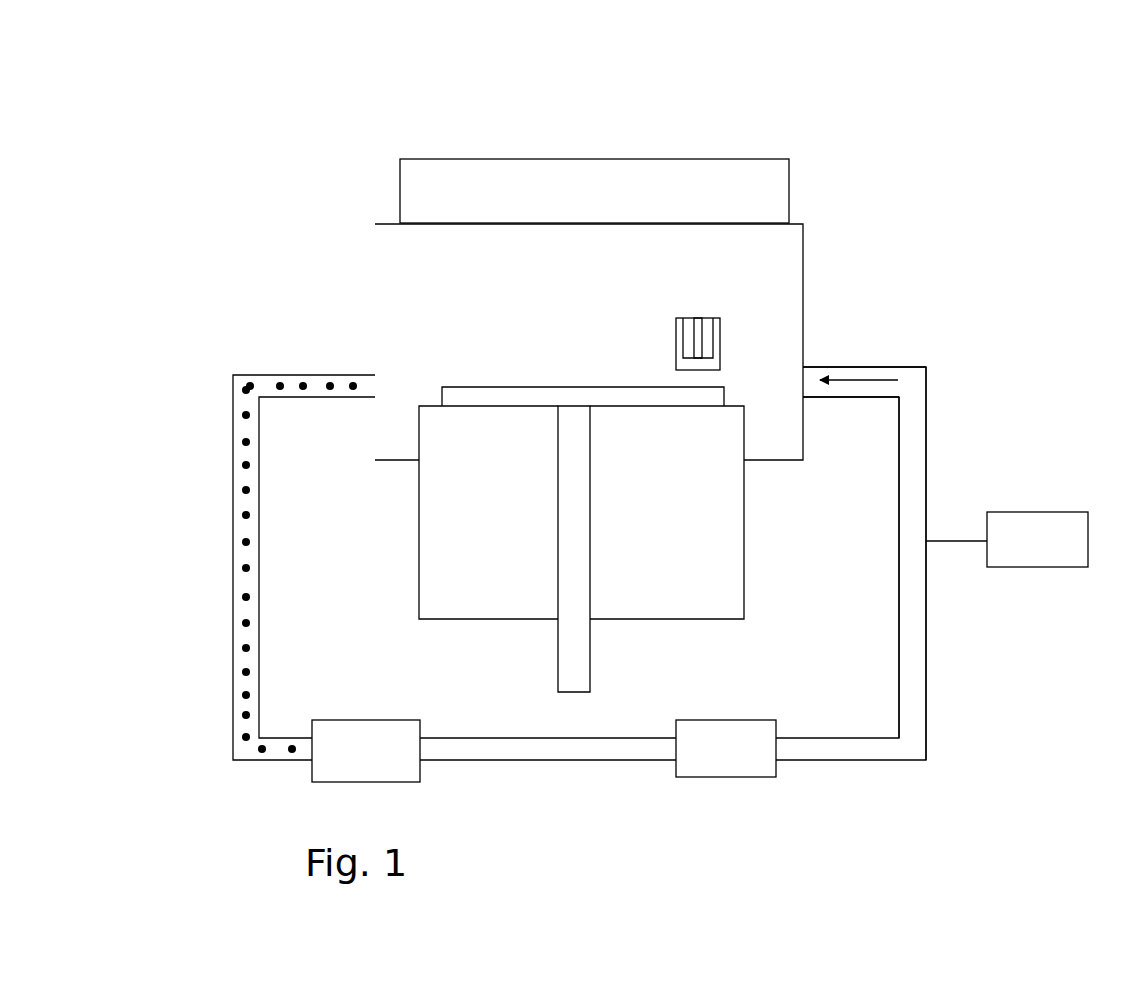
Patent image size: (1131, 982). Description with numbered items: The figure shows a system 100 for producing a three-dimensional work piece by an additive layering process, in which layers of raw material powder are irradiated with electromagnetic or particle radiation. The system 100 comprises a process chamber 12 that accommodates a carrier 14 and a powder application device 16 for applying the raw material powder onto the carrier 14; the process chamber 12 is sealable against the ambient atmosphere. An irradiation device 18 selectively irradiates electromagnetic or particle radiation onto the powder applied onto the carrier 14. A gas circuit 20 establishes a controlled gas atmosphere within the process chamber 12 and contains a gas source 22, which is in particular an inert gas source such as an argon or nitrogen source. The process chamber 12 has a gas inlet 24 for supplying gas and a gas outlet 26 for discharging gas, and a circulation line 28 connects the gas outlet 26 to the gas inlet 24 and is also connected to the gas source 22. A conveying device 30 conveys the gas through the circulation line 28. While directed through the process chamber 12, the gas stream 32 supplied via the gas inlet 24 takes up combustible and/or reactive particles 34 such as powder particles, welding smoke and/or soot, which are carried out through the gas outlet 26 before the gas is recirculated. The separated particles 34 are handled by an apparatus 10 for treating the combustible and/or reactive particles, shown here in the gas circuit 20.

The system 100 is at (347, 177).
The irradiation device 18 is at (698, 158).
The process chamber 12 is at (803, 246).
The carrier 14 is at (678, 400).
The powder application device 16 is at (676, 338).
The gas outlet 26 is at (368, 373).
The combustible and/or reactive particles 34 is at (236, 458).
The gas inlet 24 is at (805, 367).
The gas stream 32 is at (877, 378).
The circulation line 28 is at (927, 733).
The gas circuit 20 is at (201, 626).
The gas source 22 is at (1038, 557).
The apparatus for treating the combustible and/or reactive particles 10 is at (333, 770).
The conveying device 30 is at (733, 772).